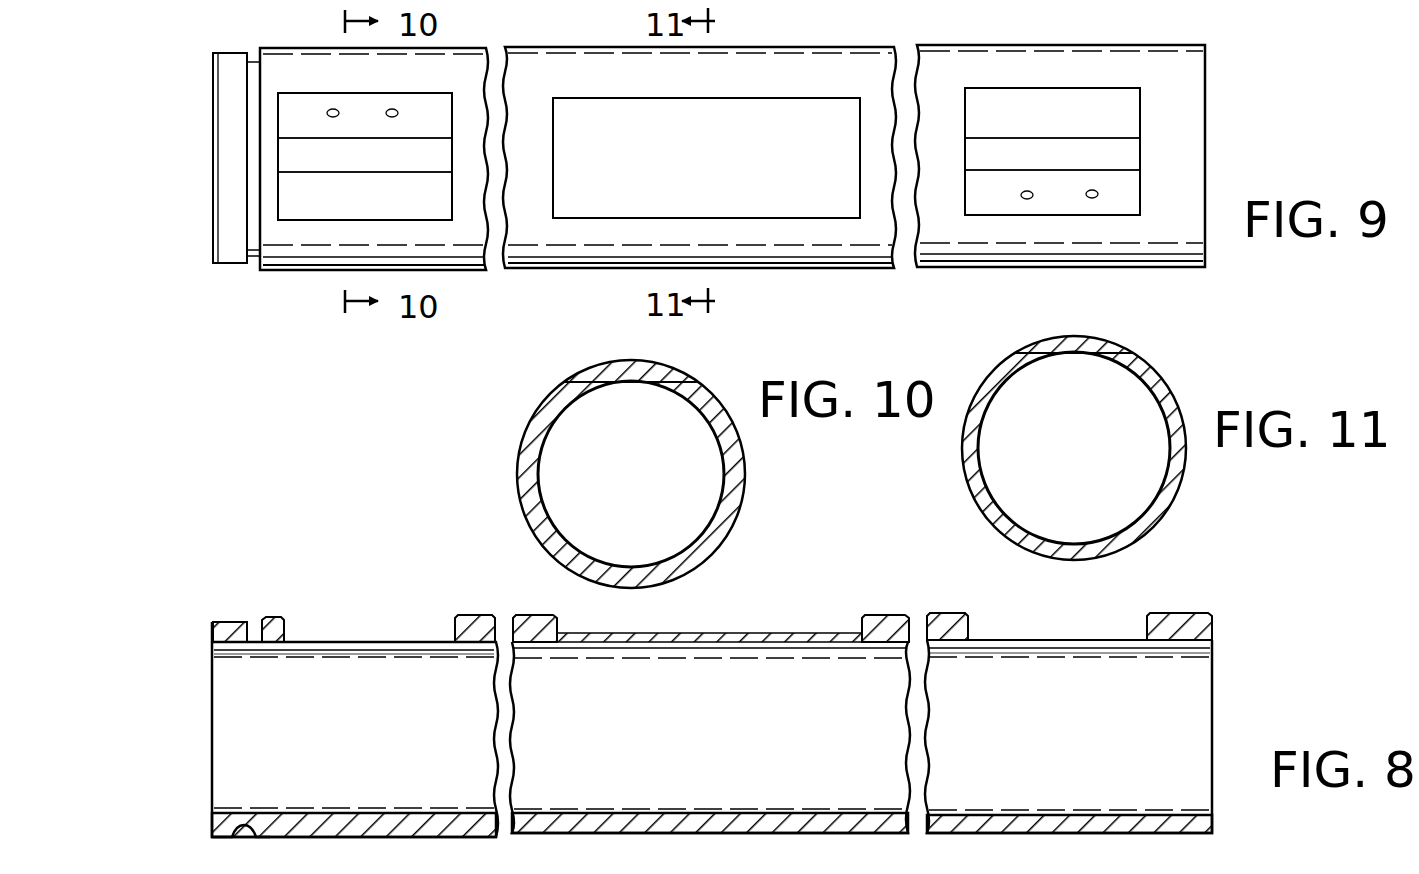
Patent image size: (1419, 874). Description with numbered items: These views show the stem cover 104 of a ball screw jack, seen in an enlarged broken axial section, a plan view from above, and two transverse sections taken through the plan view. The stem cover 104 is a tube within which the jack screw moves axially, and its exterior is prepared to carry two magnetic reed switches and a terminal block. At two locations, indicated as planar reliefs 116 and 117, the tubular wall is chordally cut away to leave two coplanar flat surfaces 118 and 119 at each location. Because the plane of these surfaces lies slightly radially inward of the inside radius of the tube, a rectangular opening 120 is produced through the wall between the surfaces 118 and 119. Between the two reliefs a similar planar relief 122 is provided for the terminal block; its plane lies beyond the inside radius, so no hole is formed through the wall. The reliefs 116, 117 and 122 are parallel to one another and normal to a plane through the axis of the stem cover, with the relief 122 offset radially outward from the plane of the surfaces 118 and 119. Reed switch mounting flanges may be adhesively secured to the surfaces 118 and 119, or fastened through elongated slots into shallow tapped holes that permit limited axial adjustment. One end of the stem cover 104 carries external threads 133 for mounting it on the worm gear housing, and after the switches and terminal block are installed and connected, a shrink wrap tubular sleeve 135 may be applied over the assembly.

In FIG. 9, the stem cover 104 is at (878, 38).
In FIG. 10, the stem cover 104 is at (735, 525).
In FIG. 11, the stem cover 104 is at (1178, 485).
In FIG. 8, the stem cover 104 is at (695, 833).
In FIG. 9, the planar relief 116 is at (315, 227).
In FIG. 10, the planar relief 116 is at (697, 376).
In FIG. 8, the planar relief 116 is at (418, 616).
In FIG. 9, the planar relief 117 is at (1117, 225).
In FIG. 8, the planar relief 117 is at (1114, 614).
In FIG. 10, the flat surface 118 is at (600, 352).
In FIG. 8, the flat surface 118 is at (320, 642).
In FIG. 10, the flat surface 119 is at (672, 382).
In FIG. 8, the flat surface 119 is at (737, 611).
In FIG. 10, the rectangular opening 120 is at (626, 378).
In FIG. 8, the rectangular opening 120 is at (378, 650).
In FIG. 9, the planar relief 122 is at (740, 108).
In FIG. 11, the planar relief 122 is at (1037, 353).
In FIG. 8, the planar relief 122 is at (718, 633).
In FIG. 9, the external threads 133 is at (238, 268).
In FIG. 8, the shrink wrap tubular sleeve 135 is at (215, 830).